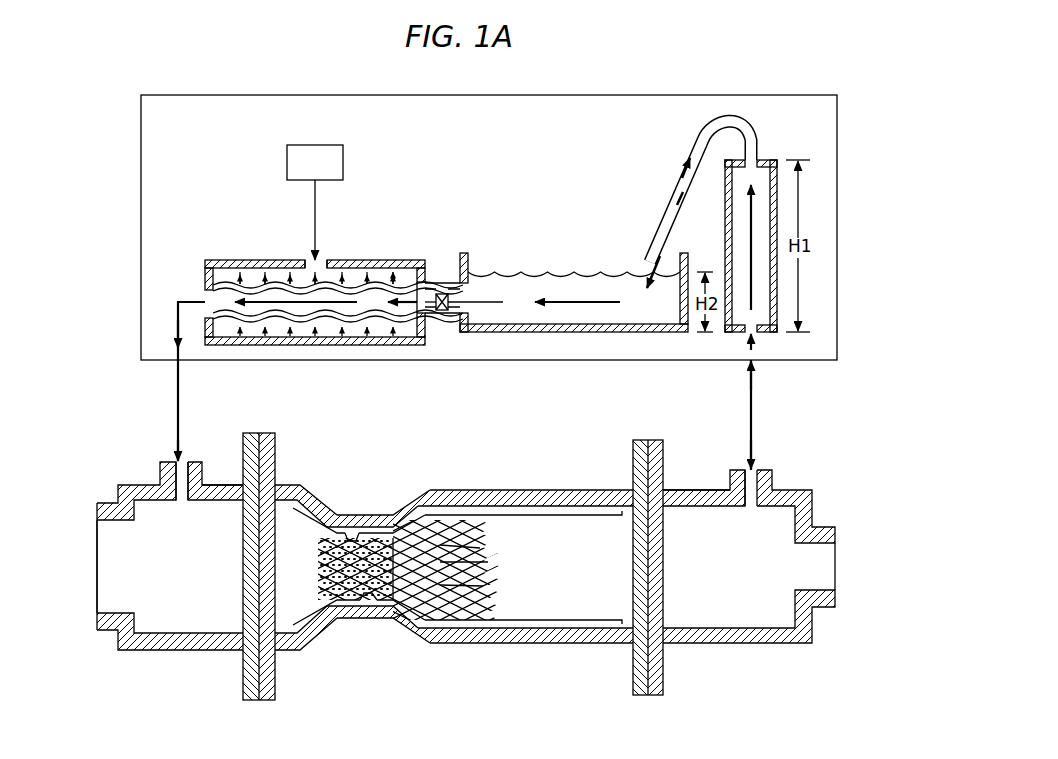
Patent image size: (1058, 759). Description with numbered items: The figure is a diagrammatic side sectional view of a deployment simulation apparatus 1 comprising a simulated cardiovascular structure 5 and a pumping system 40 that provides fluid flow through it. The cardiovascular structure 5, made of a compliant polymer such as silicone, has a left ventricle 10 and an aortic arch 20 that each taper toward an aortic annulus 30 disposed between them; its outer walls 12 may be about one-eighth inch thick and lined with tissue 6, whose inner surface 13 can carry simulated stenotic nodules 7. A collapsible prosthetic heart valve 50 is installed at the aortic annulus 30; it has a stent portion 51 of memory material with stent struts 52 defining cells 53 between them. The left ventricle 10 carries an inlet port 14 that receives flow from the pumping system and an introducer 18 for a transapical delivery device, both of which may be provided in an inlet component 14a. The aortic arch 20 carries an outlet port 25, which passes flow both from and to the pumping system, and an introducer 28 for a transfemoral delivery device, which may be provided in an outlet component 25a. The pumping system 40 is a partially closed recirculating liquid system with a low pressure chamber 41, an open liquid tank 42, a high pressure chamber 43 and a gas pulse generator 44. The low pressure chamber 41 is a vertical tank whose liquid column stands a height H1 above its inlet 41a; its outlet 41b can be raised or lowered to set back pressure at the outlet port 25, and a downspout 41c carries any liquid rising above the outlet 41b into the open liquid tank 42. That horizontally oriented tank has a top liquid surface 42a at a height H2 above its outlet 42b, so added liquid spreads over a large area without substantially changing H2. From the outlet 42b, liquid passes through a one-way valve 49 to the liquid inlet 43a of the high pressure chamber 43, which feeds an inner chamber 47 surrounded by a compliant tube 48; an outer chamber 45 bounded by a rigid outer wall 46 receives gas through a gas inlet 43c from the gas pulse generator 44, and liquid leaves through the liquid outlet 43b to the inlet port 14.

The deployment simulation apparatus 1 is at (202, 66).
The pumping system 40 is at (310, 92).
The gas pulse generator 44 is at (326, 174).
The high pressure chamber 43 is at (340, 346).
The liquid inlet 43a is at (424, 346).
The liquid outlet 43b is at (206, 290).
The gas inlet 43c is at (318, 262).
The outer chamber 45 is at (407, 262).
The rigid outer wall 46 is at (428, 284).
The inner chamber 47 is at (374, 300).
The compliant tube 48 is at (345, 278).
The one-way valve 49 is at (443, 294).
The open liquid tank 42 is at (603, 333).
The top liquid surface 42a is at (538, 270).
The outlet 42b is at (454, 333).
The low pressure chamber 41 is at (778, 200).
The inlet 41a is at (766, 335).
The outlet 41b is at (766, 158).
The downspout 41c is at (672, 166).
The inlet port 14 is at (187, 460).
The inlet component 14a is at (224, 478).
The left ventricle 10 is at (303, 486).
The aortic annulus 30 is at (372, 508).
The stenotic nodules 7 is at (352, 538).
The tissue 6 is at (392, 532).
The simulated cardiovascular structure 5 is at (489, 486).
The outer walls 12 is at (520, 500).
The aortic arch 20 is at (594, 486).
The inner surface 13 is at (570, 516).
The stent struts 52 is at (482, 548).
The cells 53 is at (490, 562).
The stent portion 51 is at (484, 586).
The collapsible prosthetic heart valve 50 is at (495, 604).
The outlet port 25 is at (766, 470).
The outlet component 25a is at (701, 488).
The introducer 18 is at (96, 562).
The introducer 28 is at (836, 562).